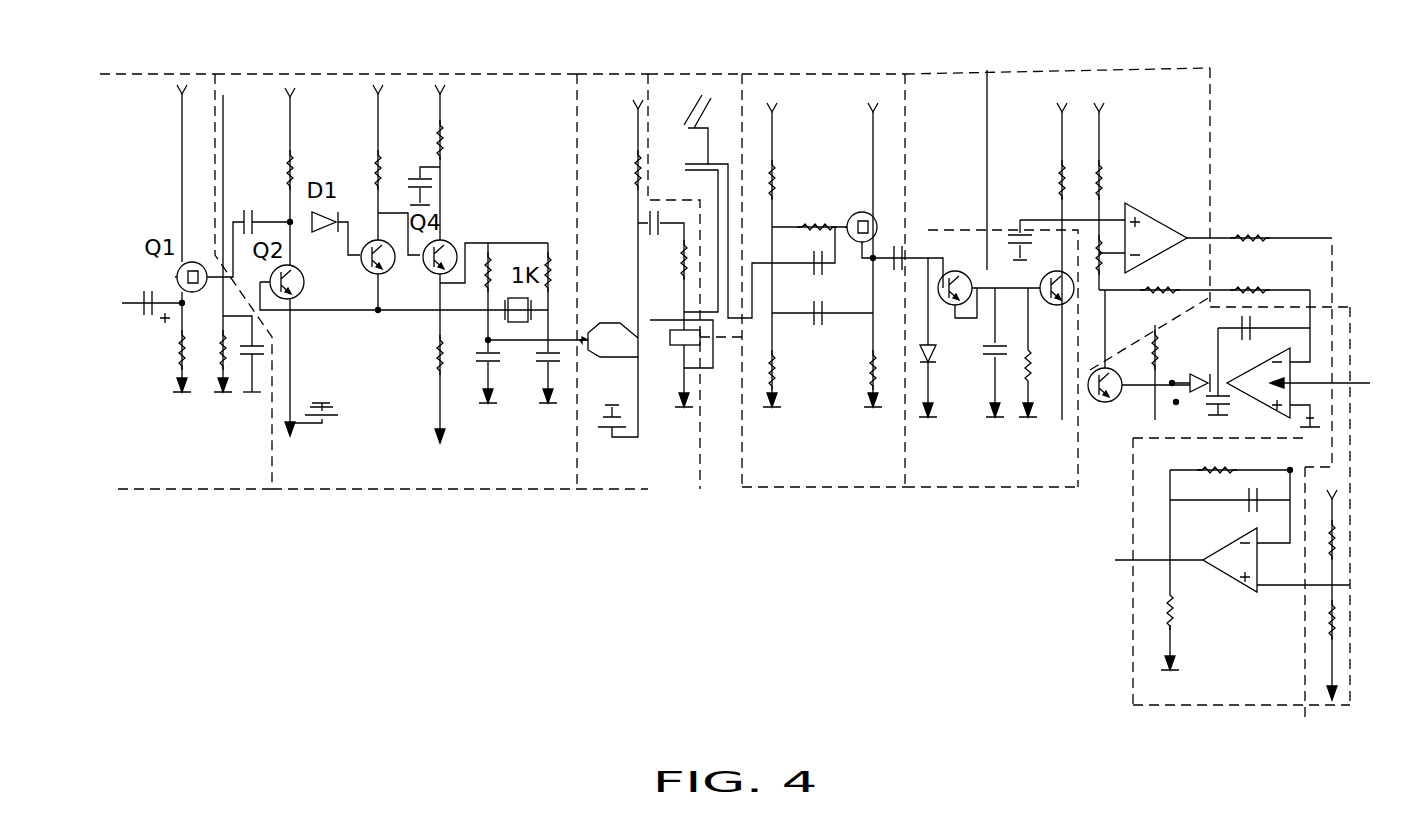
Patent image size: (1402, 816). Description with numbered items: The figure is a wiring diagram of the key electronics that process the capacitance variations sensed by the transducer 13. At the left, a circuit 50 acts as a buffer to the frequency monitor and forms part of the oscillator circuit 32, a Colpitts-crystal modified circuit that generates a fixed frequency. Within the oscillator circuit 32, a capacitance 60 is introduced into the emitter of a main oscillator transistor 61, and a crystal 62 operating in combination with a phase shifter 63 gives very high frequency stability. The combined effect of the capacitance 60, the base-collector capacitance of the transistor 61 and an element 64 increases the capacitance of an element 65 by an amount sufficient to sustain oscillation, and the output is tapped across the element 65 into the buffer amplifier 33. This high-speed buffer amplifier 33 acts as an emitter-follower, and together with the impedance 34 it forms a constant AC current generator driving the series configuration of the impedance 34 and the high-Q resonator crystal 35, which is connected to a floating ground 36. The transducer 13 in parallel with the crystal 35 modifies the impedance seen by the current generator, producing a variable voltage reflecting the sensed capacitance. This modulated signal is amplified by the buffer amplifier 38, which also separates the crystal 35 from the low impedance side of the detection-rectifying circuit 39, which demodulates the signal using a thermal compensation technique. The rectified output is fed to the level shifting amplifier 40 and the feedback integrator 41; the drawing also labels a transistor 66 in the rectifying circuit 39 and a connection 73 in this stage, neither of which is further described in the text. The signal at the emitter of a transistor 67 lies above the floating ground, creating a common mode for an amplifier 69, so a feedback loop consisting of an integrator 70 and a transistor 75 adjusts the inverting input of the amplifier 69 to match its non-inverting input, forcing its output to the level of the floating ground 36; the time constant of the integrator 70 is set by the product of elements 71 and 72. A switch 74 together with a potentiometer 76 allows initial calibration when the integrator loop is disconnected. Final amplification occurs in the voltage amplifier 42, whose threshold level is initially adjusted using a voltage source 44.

The transducer 13 is at (695, 264).
The oscillator circuit 32 is at (396, 263).
The buffer amplifier 33 is at (612, 264).
The impedance 34 is at (647, 323).
The high-Q resonator crystal 35 is at (698, 377).
The floating ground 36 is at (1313, 417).
The buffer amplifier 38 is at (842, 260).
The detection-rectifying circuit 39 is at (984, 377).
The level shifting amplifier 40 is at (1107, 203).
The feedback integrator 41 is at (1304, 475).
The voltage amplifier 42 is at (1241, 597).
The voltage source 44 is at (1360, 595).
The buffer circuit 50 is at (186, 281).
The capacitance 60 is at (248, 365).
The main oscillator transistor 61 is at (290, 222).
The crystal 62 is at (513, 348).
The phase shifter 63 is at (357, 193).
The element 64 is at (598, 357).
The element 65 is at (477, 377).
The transistor 66 is at (947, 318).
The transistor 67 is at (1055, 273).
The amplifier 69 is at (1160, 230).
The integrator 70 is at (1284, 383).
The element 71 is at (1238, 290).
The element 72 is at (1277, 320).
The output line 73 is at (1177, 400).
The switch 74 is at (1155, 407).
The transistor 75 is at (1100, 413).
The potentiometer 76 is at (1105, 300).